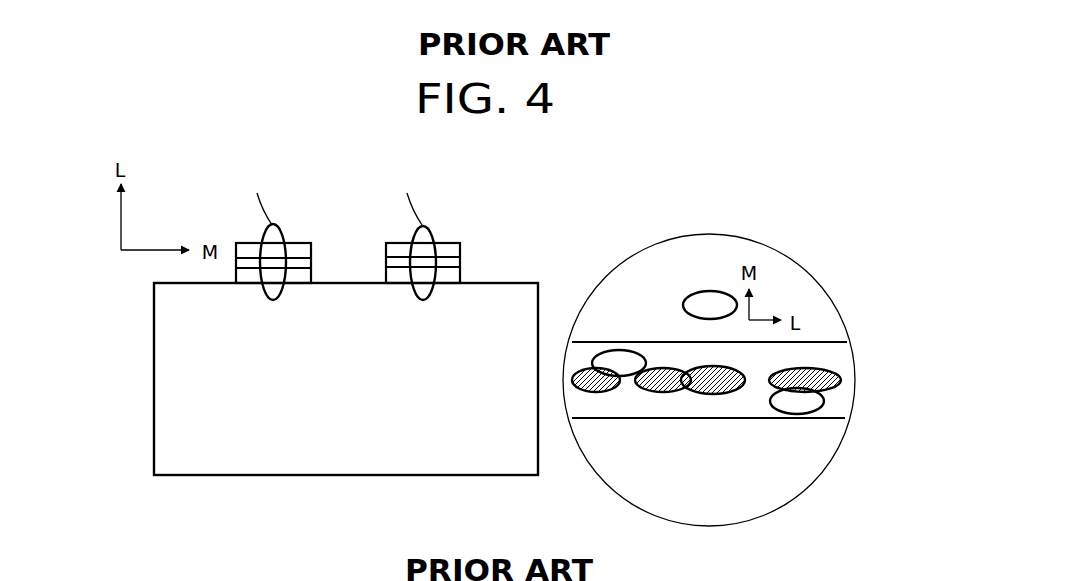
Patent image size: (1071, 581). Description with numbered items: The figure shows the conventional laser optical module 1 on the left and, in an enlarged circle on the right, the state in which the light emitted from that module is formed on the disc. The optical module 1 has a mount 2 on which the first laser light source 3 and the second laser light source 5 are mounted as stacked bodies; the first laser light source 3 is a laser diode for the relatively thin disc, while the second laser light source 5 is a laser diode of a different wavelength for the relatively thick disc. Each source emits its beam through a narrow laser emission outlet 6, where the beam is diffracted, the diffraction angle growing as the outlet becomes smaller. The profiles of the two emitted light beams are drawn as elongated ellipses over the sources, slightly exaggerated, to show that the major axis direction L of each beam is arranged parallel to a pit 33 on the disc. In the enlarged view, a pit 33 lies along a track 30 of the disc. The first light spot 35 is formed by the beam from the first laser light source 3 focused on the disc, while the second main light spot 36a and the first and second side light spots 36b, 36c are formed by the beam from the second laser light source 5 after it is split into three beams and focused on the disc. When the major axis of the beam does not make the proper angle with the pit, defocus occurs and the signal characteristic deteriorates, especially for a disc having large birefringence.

The optical module 1 is at (214, 197).
The mount 2 is at (353, 467).
The first laser light source 3 is at (298, 248).
The second laser light source 5 is at (448, 248).
The laser emission outlet 6 is at (307, 263).
The track 30 is at (808, 350).
The pit 33 is at (828, 368).
The first light spot 35 is at (698, 291).
The second main light spot 36a is at (713, 394).
The first side light spot 36b is at (617, 350).
The second side light spot 36c is at (793, 414).